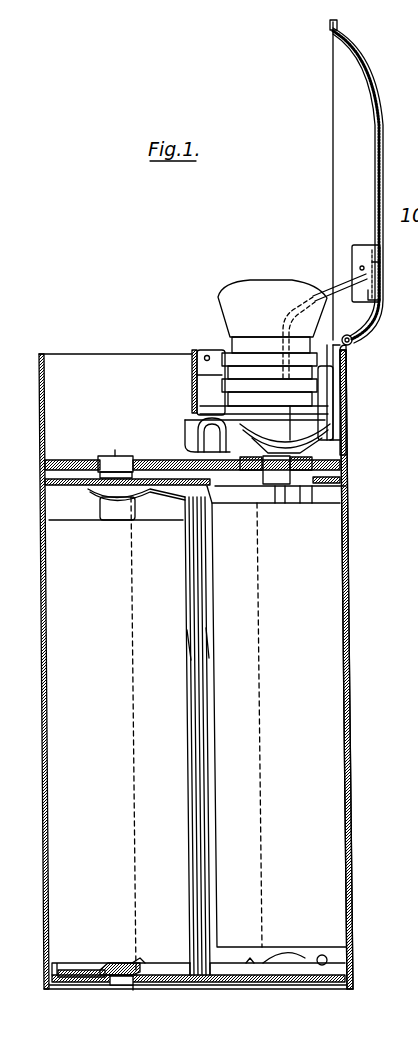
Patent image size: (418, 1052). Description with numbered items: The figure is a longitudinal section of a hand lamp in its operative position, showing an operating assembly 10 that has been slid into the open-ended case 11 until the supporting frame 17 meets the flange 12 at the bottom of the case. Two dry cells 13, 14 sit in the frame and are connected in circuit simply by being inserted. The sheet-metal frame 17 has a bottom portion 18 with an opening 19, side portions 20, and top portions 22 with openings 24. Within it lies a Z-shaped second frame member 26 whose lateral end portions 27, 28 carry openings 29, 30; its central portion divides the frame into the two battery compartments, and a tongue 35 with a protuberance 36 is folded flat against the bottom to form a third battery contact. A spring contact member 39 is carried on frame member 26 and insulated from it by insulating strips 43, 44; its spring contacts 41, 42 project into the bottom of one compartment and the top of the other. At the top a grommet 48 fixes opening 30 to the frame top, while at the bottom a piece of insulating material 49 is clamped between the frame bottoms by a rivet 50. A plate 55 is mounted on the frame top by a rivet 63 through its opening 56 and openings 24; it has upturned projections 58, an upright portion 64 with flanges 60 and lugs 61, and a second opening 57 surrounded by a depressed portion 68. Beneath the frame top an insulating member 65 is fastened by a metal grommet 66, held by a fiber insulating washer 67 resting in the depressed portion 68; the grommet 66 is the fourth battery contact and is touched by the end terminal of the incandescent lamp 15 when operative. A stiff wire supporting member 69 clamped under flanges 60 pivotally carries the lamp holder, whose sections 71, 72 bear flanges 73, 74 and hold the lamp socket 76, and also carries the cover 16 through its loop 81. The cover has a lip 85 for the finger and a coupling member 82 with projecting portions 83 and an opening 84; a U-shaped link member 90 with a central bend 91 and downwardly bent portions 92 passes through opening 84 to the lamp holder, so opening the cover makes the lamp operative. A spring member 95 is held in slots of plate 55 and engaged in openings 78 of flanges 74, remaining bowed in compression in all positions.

The operating assembly 10 is at (68, 446).
The case 11 is at (350, 573).
The flange 12 is at (50, 990).
The dry cell 13 is at (308, 560).
The dry cell 14 is at (58, 607).
The incandescent lamp 15 is at (249, 281).
The cover 16 is at (381, 83).
The supporting frame 17 is at (85, 994).
The bottom portion 18 is at (208, 985).
The opening 19 is at (133, 990).
The side portions 20 is at (130, 702).
The top portions 22 is at (45, 470).
The openings 24 is at (115, 460).
The second frame member 26 is at (186, 586).
The lateral end portion 27 is at (168, 985).
The lateral end portion 28 is at (210, 500).
The opening 29 is at (124, 963).
The opening 30 is at (312, 500).
The tongue 35 is at (80, 968).
The protuberance 36 is at (136, 962).
The spring contact member 39 is at (204, 588).
The spring contact 41 is at (303, 962).
The spring contact 42 is at (90, 490).
The insulating strip 43 is at (208, 638).
The insulating strip 44 is at (189, 643).
The grommet 48 is at (350, 487).
The insulating material 49 is at (249, 986).
The rivet 50 is at (122, 986).
The plate 55 is at (160, 458).
The opening 56 is at (122, 457).
The opening 57 is at (255, 468).
The projections 58 is at (202, 412).
The flanges 60 is at (322, 427).
The lugs 61 is at (348, 356).
The rivet 63 is at (114, 456).
The upright portion 64 is at (340, 433).
The insulating member 65 is at (45, 490).
The metal grommet 66 is at (278, 485).
The fiber insulating washer 67 is at (245, 440).
The depressed portion 68 is at (300, 503).
The supporting member 69 is at (366, 373).
The section 71 is at (196, 354).
The section 72 is at (340, 397).
The flanges 73 is at (194, 349).
The flanges 74 is at (198, 432).
The lamp socket 76 is at (197, 375).
The openings 78 is at (280, 440).
The loop 81 is at (353, 338).
The coupling member 82 is at (366, 245).
The projecting portions 83 is at (383, 262).
The opening 84 is at (384, 280).
The lip 85 is at (330, 27).
The link member 90 is at (325, 290).
The bend 91 is at (360, 250).
The downwardly bent portions 92 is at (282, 310).
The spring member 95 is at (340, 441).